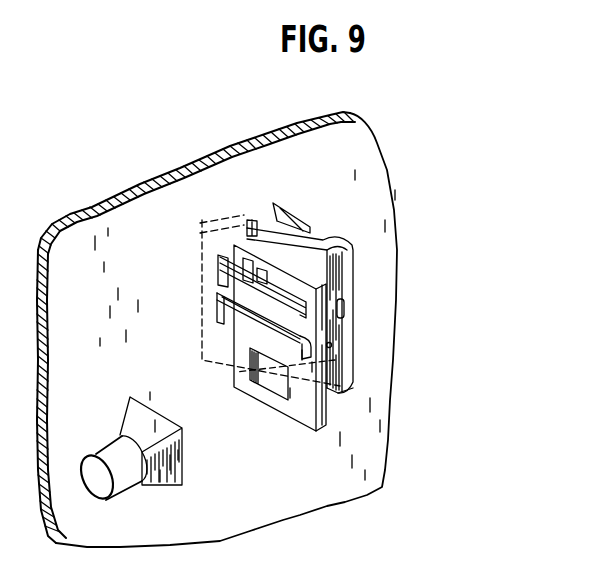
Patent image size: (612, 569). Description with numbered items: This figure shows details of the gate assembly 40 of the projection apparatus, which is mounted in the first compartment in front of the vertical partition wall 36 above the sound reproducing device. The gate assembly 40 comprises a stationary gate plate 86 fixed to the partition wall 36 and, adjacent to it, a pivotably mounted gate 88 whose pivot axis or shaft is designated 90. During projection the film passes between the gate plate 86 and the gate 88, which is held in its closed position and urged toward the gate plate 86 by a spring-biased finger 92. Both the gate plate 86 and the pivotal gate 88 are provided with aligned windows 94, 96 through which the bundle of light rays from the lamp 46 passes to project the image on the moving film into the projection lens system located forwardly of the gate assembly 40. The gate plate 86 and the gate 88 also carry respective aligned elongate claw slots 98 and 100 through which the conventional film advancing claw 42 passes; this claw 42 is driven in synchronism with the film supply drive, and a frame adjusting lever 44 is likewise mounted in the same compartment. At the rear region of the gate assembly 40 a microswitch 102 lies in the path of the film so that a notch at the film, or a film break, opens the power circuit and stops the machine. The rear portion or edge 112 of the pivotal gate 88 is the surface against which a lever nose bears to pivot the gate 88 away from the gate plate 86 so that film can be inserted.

The partition wall 36 is at (357, 144).
The gate assembly 40 is at (358, 392).
The film advancing claw 42 is at (250, 308).
The frame adjusting lever 44 is at (225, 266).
The lamp 46 is at (103, 453).
The stationary gate plate 86 is at (305, 418).
The pivotably mounted gate 88 is at (311, 243).
The pivot axis or shaft 90 is at (258, 217).
The spring-biased finger 92 is at (287, 219).
The window 94 is at (266, 386).
The window 96 is at (333, 345).
The elongate claw slot 98 is at (335, 360).
The elongate claw slot 100 is at (341, 305).
The microswitch 102 is at (228, 286).
The rear portion or edge 112 is at (202, 230).